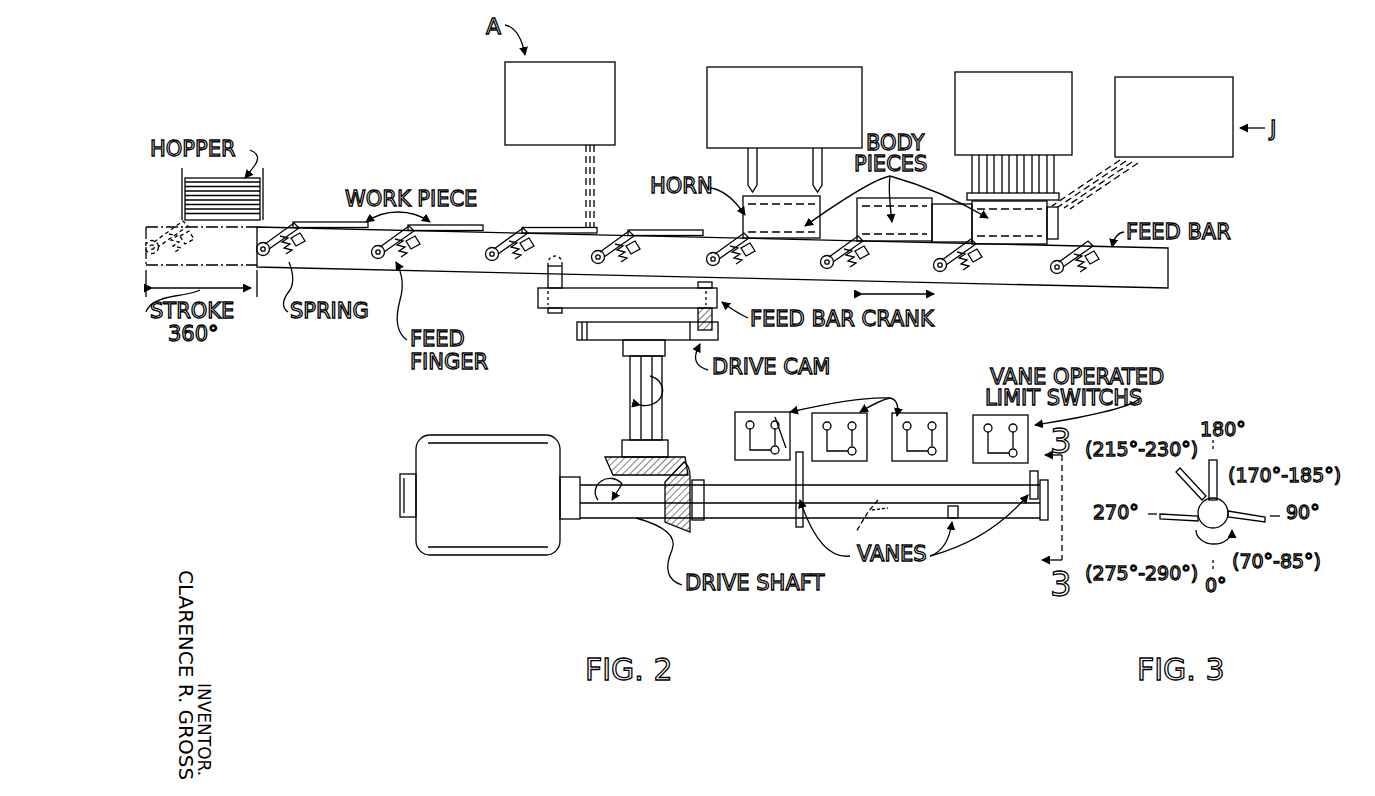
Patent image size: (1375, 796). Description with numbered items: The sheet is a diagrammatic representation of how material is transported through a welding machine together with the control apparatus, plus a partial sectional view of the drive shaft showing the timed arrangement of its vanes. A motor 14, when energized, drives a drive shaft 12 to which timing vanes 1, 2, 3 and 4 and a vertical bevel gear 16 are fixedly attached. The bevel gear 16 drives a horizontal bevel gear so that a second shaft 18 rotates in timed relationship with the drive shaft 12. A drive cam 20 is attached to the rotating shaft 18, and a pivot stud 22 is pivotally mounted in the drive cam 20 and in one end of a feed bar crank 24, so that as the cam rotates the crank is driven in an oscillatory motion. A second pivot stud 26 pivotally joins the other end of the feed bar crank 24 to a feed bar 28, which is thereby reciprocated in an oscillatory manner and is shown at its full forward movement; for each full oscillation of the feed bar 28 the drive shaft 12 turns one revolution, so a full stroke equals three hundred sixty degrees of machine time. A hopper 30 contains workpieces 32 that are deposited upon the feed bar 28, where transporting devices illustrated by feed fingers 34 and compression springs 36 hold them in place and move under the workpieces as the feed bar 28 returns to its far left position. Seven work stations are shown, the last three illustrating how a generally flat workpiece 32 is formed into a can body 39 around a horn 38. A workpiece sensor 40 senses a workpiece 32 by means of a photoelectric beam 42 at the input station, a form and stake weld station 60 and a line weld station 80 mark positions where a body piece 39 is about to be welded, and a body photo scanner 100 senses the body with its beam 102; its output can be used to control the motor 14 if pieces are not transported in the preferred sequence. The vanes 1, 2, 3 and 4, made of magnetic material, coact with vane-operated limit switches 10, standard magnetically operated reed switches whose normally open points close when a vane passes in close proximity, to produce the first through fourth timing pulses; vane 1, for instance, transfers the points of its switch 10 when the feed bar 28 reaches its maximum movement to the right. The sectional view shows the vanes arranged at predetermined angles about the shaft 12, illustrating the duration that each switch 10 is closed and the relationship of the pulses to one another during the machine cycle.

In FIG. 2, the vane-operated limit switch 10 is at (735, 425).
In FIG. 2, the drive shaft 12 is at (742, 518).
In FIG. 2, the motor 14 is at (517, 557).
In FIG. 2, the bevel gear 16 is at (672, 458).
In FIG. 2, the second shaft 18 is at (630, 382).
In FIG. 2, the drive cam 20 is at (585, 341).
In FIG. 2, the pivot stud 22 is at (712, 326).
In FIG. 2, the feed bar crank 24 is at (540, 298).
In FIG. 2, the second pivot stud 26 is at (548, 283).
In FIG. 2, the feed bar 28 is at (152, 238).
In FIG. 2, the hopper 30 is at (266, 186).
In FIG. 2, the workpiece 32 is at (326, 221).
In FIG. 2, the feed finger 34 is at (502, 236).
In FIG. 2, the compression spring 36 is at (405, 247).
In FIG. 2, the horn 38 is at (1060, 222).
In FIG. 2, the can body 39 is at (788, 237).
In FIG. 2, the workpiece sensor 40 is at (580, 62).
In FIG. 2, the photoelectric beam 42 is at (597, 160).
In FIG. 2, the form and stake weld station 60 is at (790, 67).
In FIG. 2, the line weld station 80 is at (1010, 72).
In FIG. 2, the body photo scanner 100 is at (1165, 77).
In FIG. 2, the photoelectric beam 102 is at (1102, 180).
In FIG. 2, the timing vane 1 is at (796, 462).
In FIG. 3, the timing vane 1 is at (1222, 470).
In FIG. 2, the timing vane 2 is at (880, 505).
In FIG. 3, the timing vane 2 is at (1257, 522).
In FIG. 2, the timing vane 3 is at (958, 508).
In FIG. 3, the timing vane 3 is at (1165, 522).
In FIG. 2, the timing vane 4 is at (1040, 480).
In FIG. 3, the timing vane 4 is at (1175, 470).